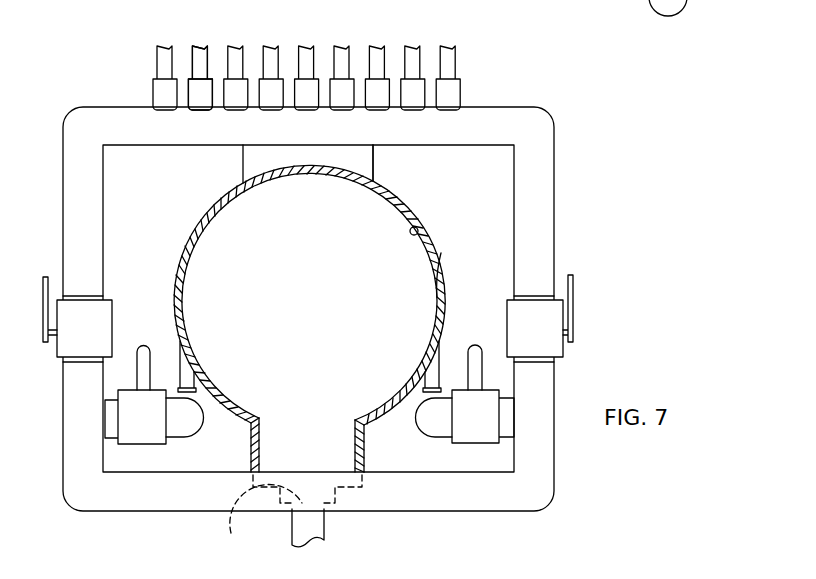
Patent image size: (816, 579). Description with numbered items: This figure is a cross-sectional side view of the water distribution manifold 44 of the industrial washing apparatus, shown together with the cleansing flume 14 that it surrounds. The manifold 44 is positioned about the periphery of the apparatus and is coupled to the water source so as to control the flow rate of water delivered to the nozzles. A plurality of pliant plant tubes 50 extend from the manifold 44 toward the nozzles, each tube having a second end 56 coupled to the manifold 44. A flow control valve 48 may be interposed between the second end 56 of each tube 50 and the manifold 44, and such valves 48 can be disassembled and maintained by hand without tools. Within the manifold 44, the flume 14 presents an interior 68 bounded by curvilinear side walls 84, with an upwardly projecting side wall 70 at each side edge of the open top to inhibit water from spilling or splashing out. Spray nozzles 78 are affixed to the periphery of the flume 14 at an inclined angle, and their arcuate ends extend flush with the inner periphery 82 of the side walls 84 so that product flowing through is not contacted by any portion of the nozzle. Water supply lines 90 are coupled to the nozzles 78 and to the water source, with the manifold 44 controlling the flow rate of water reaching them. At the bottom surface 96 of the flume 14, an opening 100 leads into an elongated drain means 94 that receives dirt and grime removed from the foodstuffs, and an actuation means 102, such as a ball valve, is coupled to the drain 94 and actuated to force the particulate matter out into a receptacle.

The cleansing flume 14 is at (188, 210).
The water distribution manifold 44 is at (567, 178).
The flow control valve 48 is at (150, 406).
The pliant plant tube 50 is at (197, 56).
The second end of tube 56 is at (447, 72).
The interior 68 is at (323, 255).
The side wall 70 is at (374, 170).
The spray nozzle 78 is at (187, 398).
The inner periphery 82 is at (418, 225).
The curvilinear side wall 84 is at (442, 253).
The water supply line 90 is at (438, 428).
The drain means 94 is at (368, 462).
The bottom surface 96 is at (254, 420).
The opening 100 is at (295, 423).
The actuation means 102 is at (241, 522).